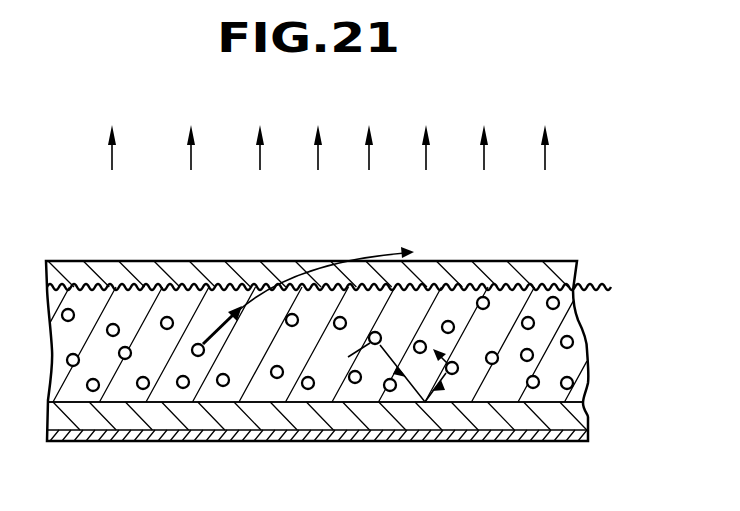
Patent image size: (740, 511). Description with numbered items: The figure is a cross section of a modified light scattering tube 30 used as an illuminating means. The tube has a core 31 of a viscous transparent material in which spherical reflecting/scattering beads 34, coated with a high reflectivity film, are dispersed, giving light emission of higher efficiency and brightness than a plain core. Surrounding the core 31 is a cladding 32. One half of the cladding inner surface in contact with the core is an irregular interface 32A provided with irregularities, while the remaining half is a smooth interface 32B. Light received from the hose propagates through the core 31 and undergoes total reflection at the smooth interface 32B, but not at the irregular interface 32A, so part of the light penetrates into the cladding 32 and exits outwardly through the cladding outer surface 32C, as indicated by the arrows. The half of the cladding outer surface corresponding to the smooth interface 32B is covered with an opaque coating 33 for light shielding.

The light scattering tube 30 is at (204, 260).
The core 31 is at (570, 358).
The cladding 32 is at (249, 424).
The irregular interface 32A is at (113, 296).
The smooth interface 32B is at (298, 402).
The cladding outer surface 32C is at (556, 261).
The opaque coating 33 is at (484, 428).
The spherical reflecting/scattering beads 34 is at (450, 320).